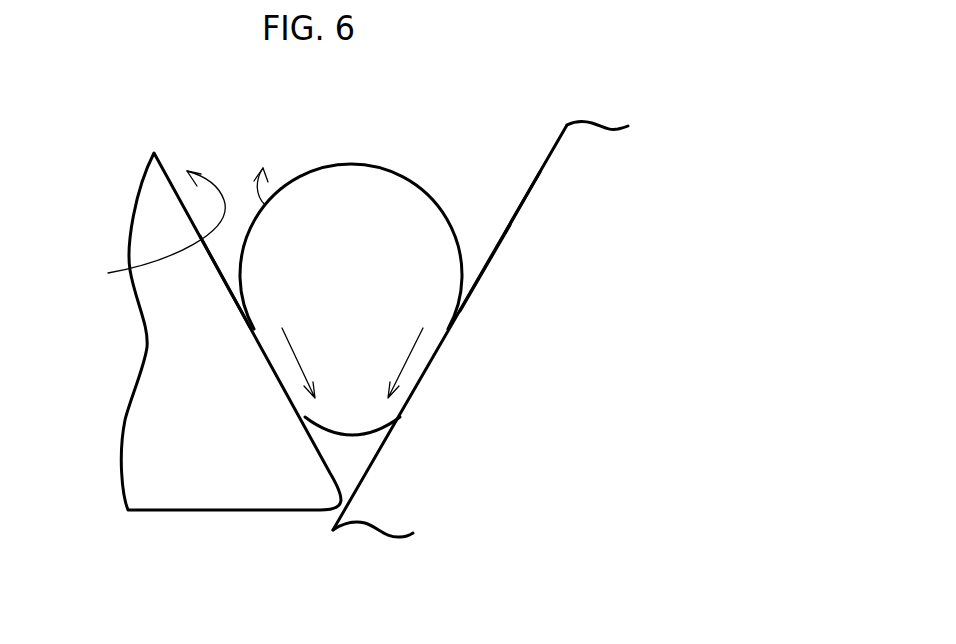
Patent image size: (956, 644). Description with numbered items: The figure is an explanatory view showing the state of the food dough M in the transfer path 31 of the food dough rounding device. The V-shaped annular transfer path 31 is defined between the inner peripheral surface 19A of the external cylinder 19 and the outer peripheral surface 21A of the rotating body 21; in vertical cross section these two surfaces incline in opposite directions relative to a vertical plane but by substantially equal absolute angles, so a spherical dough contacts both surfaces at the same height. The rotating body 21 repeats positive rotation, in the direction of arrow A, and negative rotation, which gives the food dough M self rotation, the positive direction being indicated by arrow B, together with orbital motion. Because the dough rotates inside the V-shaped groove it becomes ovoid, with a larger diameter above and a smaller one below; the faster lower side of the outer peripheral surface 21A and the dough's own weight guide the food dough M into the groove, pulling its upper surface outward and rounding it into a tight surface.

The external cylinder 19 is at (600, 121).
The inner peripheral surface 19A is at (502, 241).
The transfer path 31 is at (482, 210).
The rotating body 21 is at (185, 498).
The outer peripheral surface 21A is at (218, 264).
The food dough M is at (375, 175).
The arrow A is at (166, 205).
The arrow B is at (269, 171).